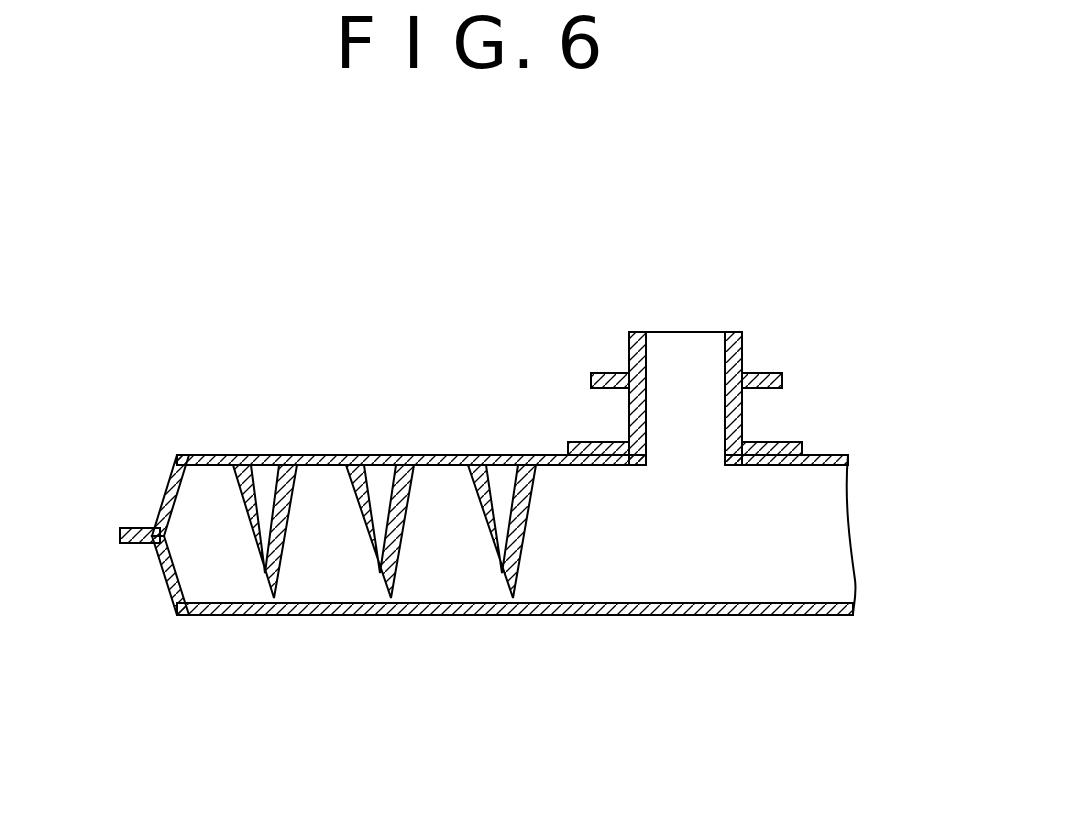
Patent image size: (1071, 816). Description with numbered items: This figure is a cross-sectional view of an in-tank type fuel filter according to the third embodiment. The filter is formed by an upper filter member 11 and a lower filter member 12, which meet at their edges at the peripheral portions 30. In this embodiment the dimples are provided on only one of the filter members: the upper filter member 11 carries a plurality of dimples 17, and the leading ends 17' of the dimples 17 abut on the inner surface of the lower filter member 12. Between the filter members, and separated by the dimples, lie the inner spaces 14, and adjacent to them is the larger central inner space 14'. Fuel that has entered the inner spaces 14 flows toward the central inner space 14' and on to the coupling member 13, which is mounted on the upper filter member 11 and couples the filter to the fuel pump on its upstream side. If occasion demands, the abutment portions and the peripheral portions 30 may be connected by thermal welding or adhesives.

The upper filter member 11 is at (200, 455).
The lower filter member 12 is at (178, 612).
The coupling member 13 is at (742, 347).
The inner space 14 is at (323, 592).
The central inner space 14' is at (765, 587).
The dimple 17 is at (464, 592).
The leading end 17' is at (563, 659).
The peripheral portion 30 is at (135, 523).